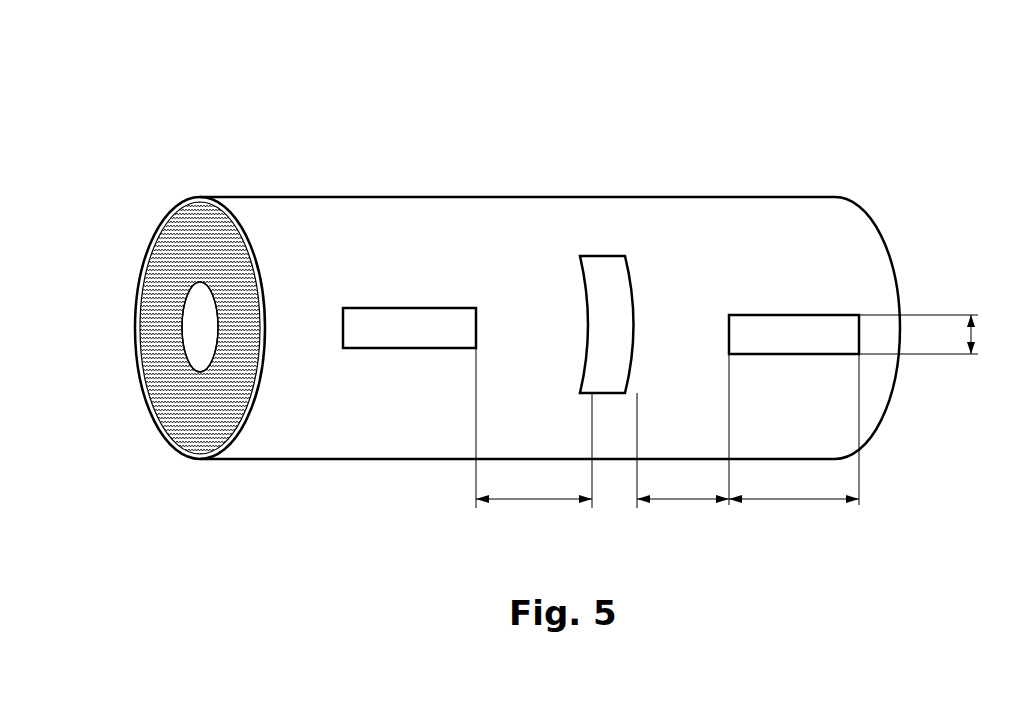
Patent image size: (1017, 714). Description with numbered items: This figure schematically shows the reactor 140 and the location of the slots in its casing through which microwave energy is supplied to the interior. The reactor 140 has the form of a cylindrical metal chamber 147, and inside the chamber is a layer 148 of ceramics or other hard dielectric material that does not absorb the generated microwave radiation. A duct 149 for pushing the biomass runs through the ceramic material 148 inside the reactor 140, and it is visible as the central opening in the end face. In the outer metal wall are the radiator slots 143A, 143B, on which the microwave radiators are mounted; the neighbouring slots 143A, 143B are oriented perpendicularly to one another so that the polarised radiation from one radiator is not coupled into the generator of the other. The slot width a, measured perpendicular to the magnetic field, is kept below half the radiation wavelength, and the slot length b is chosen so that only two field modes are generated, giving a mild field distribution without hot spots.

The reactor 140 is at (240, 130).
The slot 143A is at (452, 318).
The slot 143B is at (610, 273).
The cylindrical metal chamber 147 is at (153, 233).
The layer of ceramics or other hard dielectric material 148 is at (165, 285).
The duct 149 is at (198, 330).